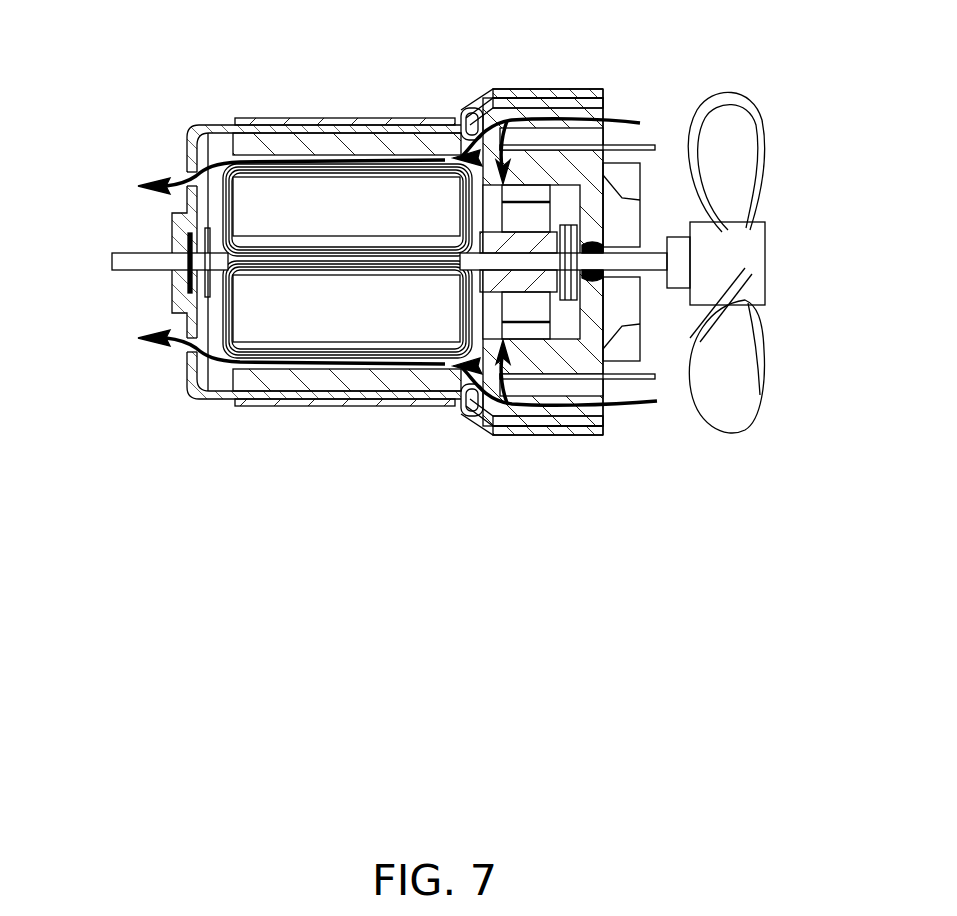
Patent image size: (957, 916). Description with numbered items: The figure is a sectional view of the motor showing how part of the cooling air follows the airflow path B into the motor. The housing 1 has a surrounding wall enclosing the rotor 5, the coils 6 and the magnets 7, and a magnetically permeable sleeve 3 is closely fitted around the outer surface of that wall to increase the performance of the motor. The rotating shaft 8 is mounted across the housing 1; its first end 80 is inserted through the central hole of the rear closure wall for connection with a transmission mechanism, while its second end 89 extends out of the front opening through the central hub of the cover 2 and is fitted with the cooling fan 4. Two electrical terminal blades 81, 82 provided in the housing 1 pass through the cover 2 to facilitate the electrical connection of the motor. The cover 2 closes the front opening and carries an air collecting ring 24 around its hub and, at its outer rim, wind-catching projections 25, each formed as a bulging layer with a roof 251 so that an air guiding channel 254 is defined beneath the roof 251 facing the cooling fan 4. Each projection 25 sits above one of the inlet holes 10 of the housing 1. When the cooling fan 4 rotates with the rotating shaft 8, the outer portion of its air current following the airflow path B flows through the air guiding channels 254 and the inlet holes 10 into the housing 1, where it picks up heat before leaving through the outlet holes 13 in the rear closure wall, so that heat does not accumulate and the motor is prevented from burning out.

The housing 1 is at (222, 398).
The cover 2 is at (590, 397).
The magnetically permeable sleeve 3 is at (288, 405).
The cooling fan 4 is at (731, 414).
The rotor 5 is at (268, 331).
The coils 6 is at (228, 264).
The magnets 7 is at (353, 380).
The rotating shaft 8 is at (545, 262).
The inlet holes 10 is at (472, 111).
The outlet holes 13 is at (185, 176).
The air collecting ring 24 is at (622, 331).
The wind-catching projections 25 is at (572, 85).
The first end 80 is at (143, 262).
The electrical terminal blade 81 is at (648, 365).
The electrical terminal blade 82 is at (738, 122).
The second end 89 is at (702, 231).
The roof 251 is at (549, 92).
The air guiding channel 254 is at (590, 106).
The airflow path B is at (567, 270).